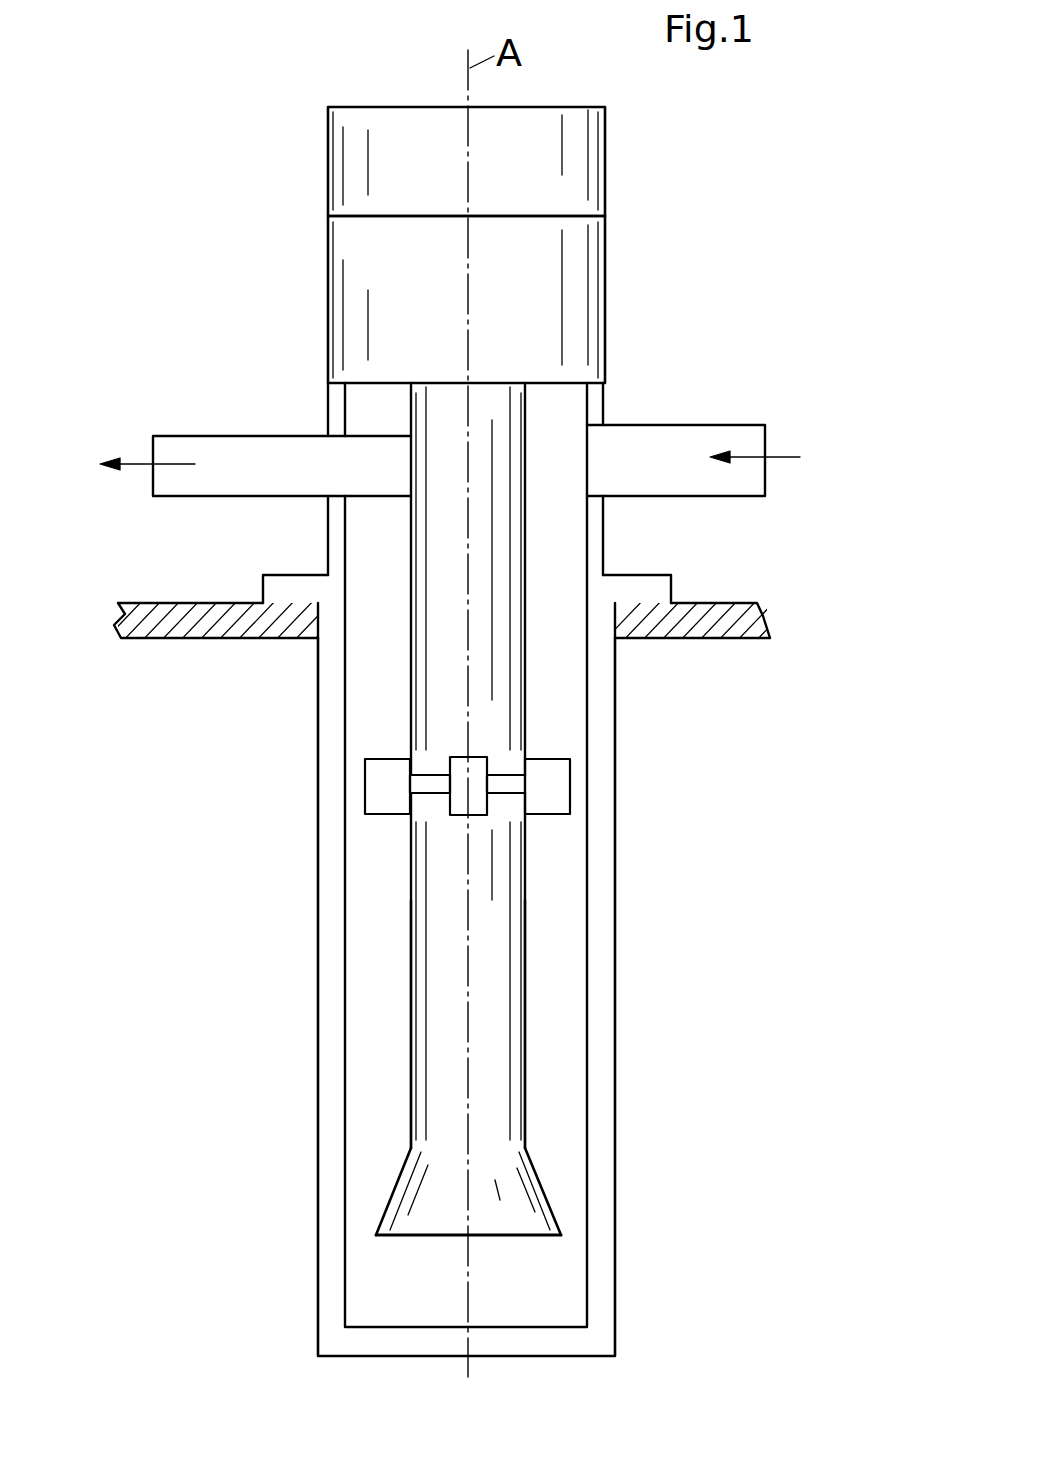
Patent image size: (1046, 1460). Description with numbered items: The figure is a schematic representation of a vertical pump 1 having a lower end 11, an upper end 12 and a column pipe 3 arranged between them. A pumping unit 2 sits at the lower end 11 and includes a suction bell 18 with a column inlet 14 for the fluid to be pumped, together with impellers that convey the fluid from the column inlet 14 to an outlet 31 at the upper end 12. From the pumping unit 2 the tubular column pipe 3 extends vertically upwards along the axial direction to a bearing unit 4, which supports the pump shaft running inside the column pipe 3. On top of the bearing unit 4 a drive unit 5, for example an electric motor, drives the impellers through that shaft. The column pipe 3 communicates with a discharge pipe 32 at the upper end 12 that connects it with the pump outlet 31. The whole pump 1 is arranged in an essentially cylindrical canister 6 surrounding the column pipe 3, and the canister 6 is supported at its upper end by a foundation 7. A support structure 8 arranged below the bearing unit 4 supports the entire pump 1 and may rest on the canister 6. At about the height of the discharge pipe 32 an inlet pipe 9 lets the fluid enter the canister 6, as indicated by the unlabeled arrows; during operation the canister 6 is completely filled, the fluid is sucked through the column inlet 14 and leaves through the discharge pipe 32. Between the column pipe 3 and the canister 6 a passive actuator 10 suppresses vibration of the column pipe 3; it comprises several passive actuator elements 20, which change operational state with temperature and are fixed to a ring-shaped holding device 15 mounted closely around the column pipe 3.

The vertical pump 1 is at (748, 125).
The pumping unit 2 is at (548, 1100).
The column pipe 3 is at (527, 704).
The bearing unit 4 is at (606, 302).
The drive unit 5 is at (606, 176).
The canister 6 is at (328, 897).
The foundation 7 is at (200, 626).
The support structure 8 is at (327, 400).
The inlet pipe 9 is at (704, 425).
The passive actuator 10 is at (566, 748).
The lower end 11 is at (378, 1246).
The upper end 12 is at (300, 414).
The column inlet 14 is at (513, 1237).
The holding device 15 is at (435, 775).
The suction bell 18 is at (545, 1190).
The passive actuator element 20 is at (373, 785).
The outlet 31 is at (152, 438).
The discharge pipe 32 is at (210, 497).